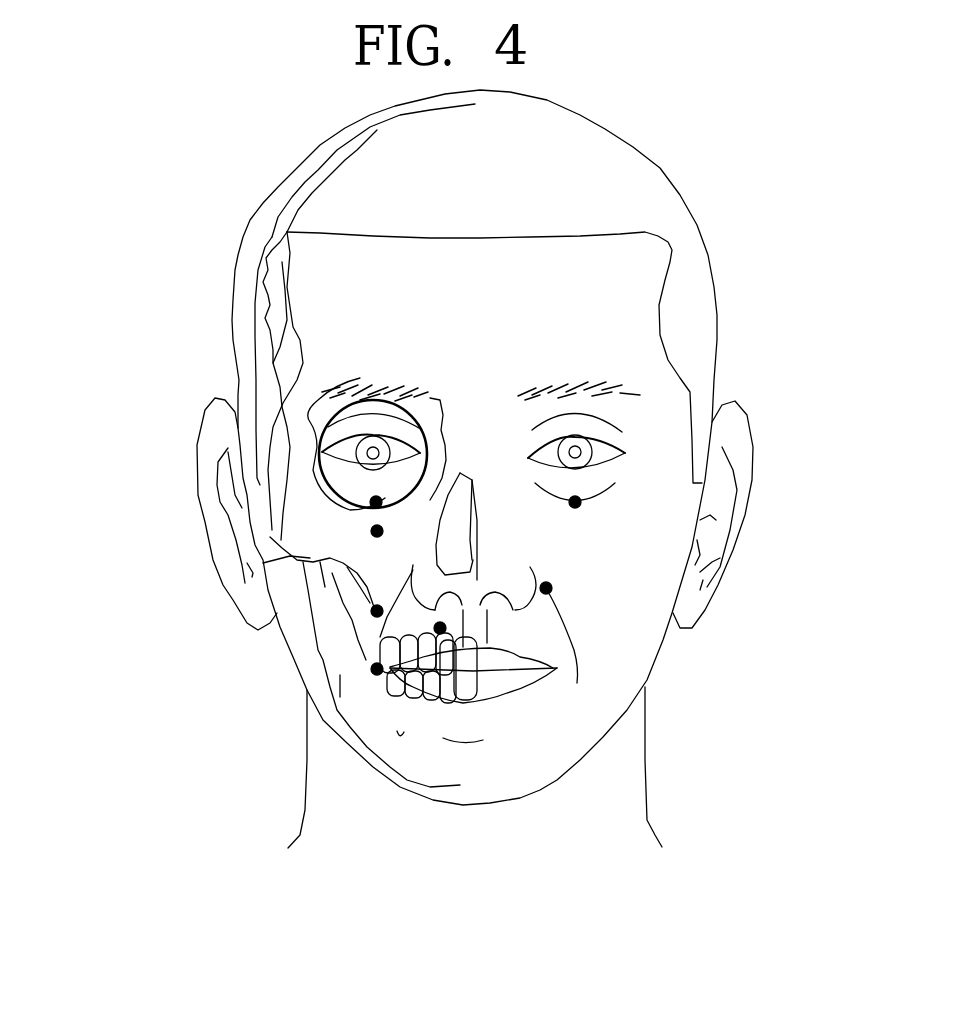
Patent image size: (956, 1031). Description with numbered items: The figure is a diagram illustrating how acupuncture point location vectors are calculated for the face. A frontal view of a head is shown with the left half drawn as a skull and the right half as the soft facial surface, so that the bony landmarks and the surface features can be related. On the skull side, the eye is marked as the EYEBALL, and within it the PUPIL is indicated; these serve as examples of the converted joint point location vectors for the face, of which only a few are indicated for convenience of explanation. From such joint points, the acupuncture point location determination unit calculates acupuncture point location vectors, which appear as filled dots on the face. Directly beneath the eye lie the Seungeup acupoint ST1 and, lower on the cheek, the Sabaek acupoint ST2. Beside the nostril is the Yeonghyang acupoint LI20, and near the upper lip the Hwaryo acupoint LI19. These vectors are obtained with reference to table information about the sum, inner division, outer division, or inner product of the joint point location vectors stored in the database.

The eyeball EYEBALL is at (332, 404).
The pupil PUPIL is at (367, 450).
The Seungeup acupoint ST1 is at (376, 502).
The Sabaek acupoint ST2 is at (377, 531).
The Yeonghyang acupoint LI20 is at (546, 588).
The Hwaryo acupoint LI19 is at (440, 628).